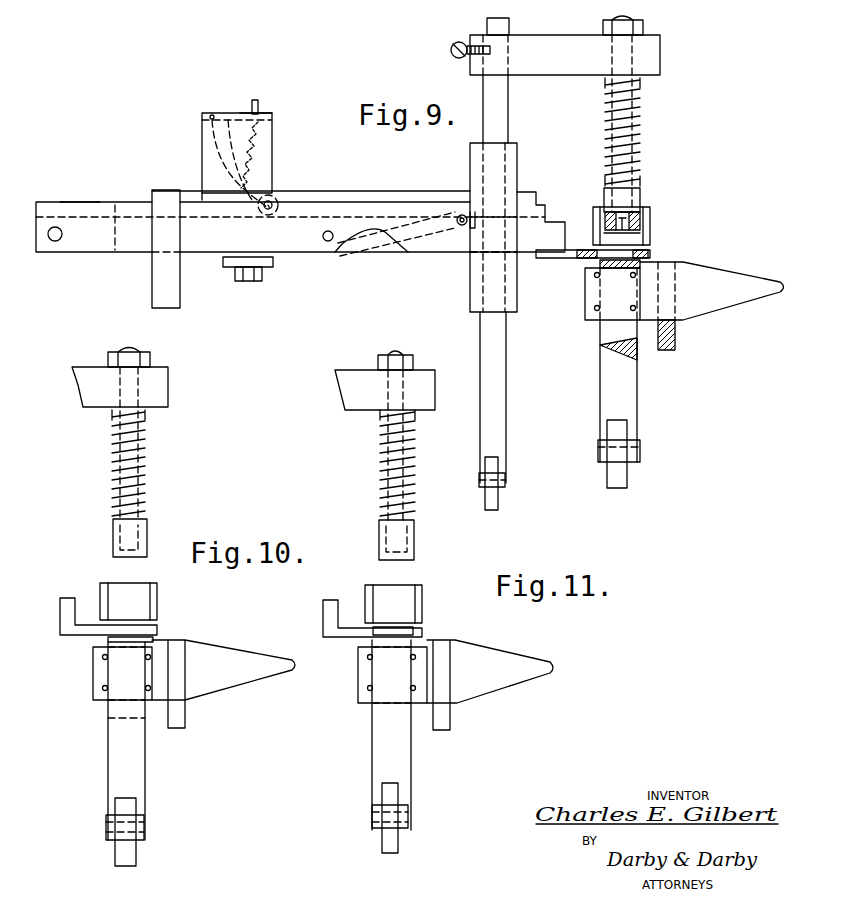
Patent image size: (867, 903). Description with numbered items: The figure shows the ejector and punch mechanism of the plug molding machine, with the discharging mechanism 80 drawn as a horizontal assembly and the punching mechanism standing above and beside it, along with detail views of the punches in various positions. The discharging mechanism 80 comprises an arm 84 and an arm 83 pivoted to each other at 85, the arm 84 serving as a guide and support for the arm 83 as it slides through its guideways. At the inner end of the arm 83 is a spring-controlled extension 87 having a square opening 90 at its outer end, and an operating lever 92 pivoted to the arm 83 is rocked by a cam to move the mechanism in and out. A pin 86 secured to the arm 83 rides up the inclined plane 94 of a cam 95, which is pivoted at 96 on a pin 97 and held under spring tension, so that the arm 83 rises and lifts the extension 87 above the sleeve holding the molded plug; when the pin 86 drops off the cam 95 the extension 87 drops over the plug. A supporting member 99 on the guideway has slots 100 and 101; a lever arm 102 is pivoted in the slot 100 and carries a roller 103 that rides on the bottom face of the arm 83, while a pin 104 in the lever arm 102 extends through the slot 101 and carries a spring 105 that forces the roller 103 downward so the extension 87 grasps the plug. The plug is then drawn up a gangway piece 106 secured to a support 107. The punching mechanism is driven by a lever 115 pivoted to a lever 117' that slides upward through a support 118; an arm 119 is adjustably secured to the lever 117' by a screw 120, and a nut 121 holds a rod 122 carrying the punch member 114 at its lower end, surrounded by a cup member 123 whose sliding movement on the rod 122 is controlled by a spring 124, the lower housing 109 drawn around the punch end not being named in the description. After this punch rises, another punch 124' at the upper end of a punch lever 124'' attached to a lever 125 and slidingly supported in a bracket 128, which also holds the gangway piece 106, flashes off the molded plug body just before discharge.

In FIG. 9, the discharging mechanism 80 is at (78, 255).
In FIG. 9, the arm 83 is at (116, 212).
In FIG. 9, the arm 84 is at (68, 202).
In FIG. 9, the pivot 85 is at (53, 227).
In FIG. 9, the pin 86 is at (325, 242).
In FIG. 9, the extension 87 is at (650, 255).
In FIG. 10, the extension 87 is at (66, 598).
In FIG. 11, the extension 87 is at (330, 600).
In FIG. 9, the square opening 90 is at (640, 240).
In FIG. 9, the operating lever 92 is at (235, 262).
In FIG. 9, the inclined plane 94 is at (400, 213).
In FIG. 9, the cam 95 is at (368, 246).
In FIG. 9, the pivot 96 is at (460, 215).
In FIG. 9, the pin 97 is at (462, 226).
In FIG. 9, the supporting member 99 is at (202, 130).
In FIG. 9, the slot 100 is at (240, 113).
In FIG. 9, the slot 101 is at (264, 110).
In FIG. 9, the lever arm 102 is at (210, 168).
In FIG. 9, the roller 103 is at (280, 200).
In FIG. 9, the pin 104 is at (259, 104).
In FIG. 9, the spring 105 is at (263, 142).
In FIG. 9, the gangway piece 106 is at (745, 283).
In FIG. 10, the gangway piece 106 is at (240, 662).
In FIG. 11, the gangway piece 106 is at (508, 656).
In FIG. 9, the support 107 is at (580, 297).
In FIG. 9, the housing 109 is at (658, 215).
In FIG. 10, the housing 109 is at (158, 597).
In FIG. 11, the housing 109 is at (422, 590).
In FIG. 9, the punch member 114 is at (612, 232).
In FIG. 9, the lever 115 is at (498, 497).
In FIG. 9, the lever 117' is at (519, 250).
In FIG. 9, the support 118 is at (517, 150).
In FIG. 9, the arm 119 is at (565, 55).
In FIG. 10, the arm 119 is at (165, 380).
In FIG. 11, the arm 119 is at (352, 372).
In FIG. 9, the screw 120 is at (457, 42).
In FIG. 9, the nut 121 is at (645, 30).
In FIG. 10, the nut 121 is at (108, 355).
In FIG. 11, the nut 121 is at (413, 358).
In FIG. 9, the rod 122 is at (640, 136).
In FIG. 10, the rod 122 is at (115, 506).
In FIG. 11, the rod 122 is at (386, 486).
In FIG. 9, the cup member 123 is at (640, 196).
In FIG. 10, the cup member 123 is at (107, 543).
In FIG. 11, the cup member 123 is at (379, 535).
In FIG. 9, the spring 124 is at (652, 123).
In FIG. 10, the spring 124 is at (96, 443).
In FIG. 11, the spring 124 is at (361, 445).
In FIG. 10, the punch 124' is at (95, 741).
In FIG. 11, the punch 124' is at (420, 620).
In FIG. 9, the punch lever 124'' is at (651, 365).
In FIG. 10, the punch lever 124'' is at (171, 627).
In FIG. 11, the punch lever 124'' is at (427, 735).
In FIG. 9, the lever 125 is at (618, 475).
In FIG. 10, the lever 125 is at (118, 852).
In FIG. 11, the lever 125 is at (392, 838).
In FIG. 10, the bracket 128 is at (93, 677).
In FIG. 11, the bracket 128 is at (357, 690).